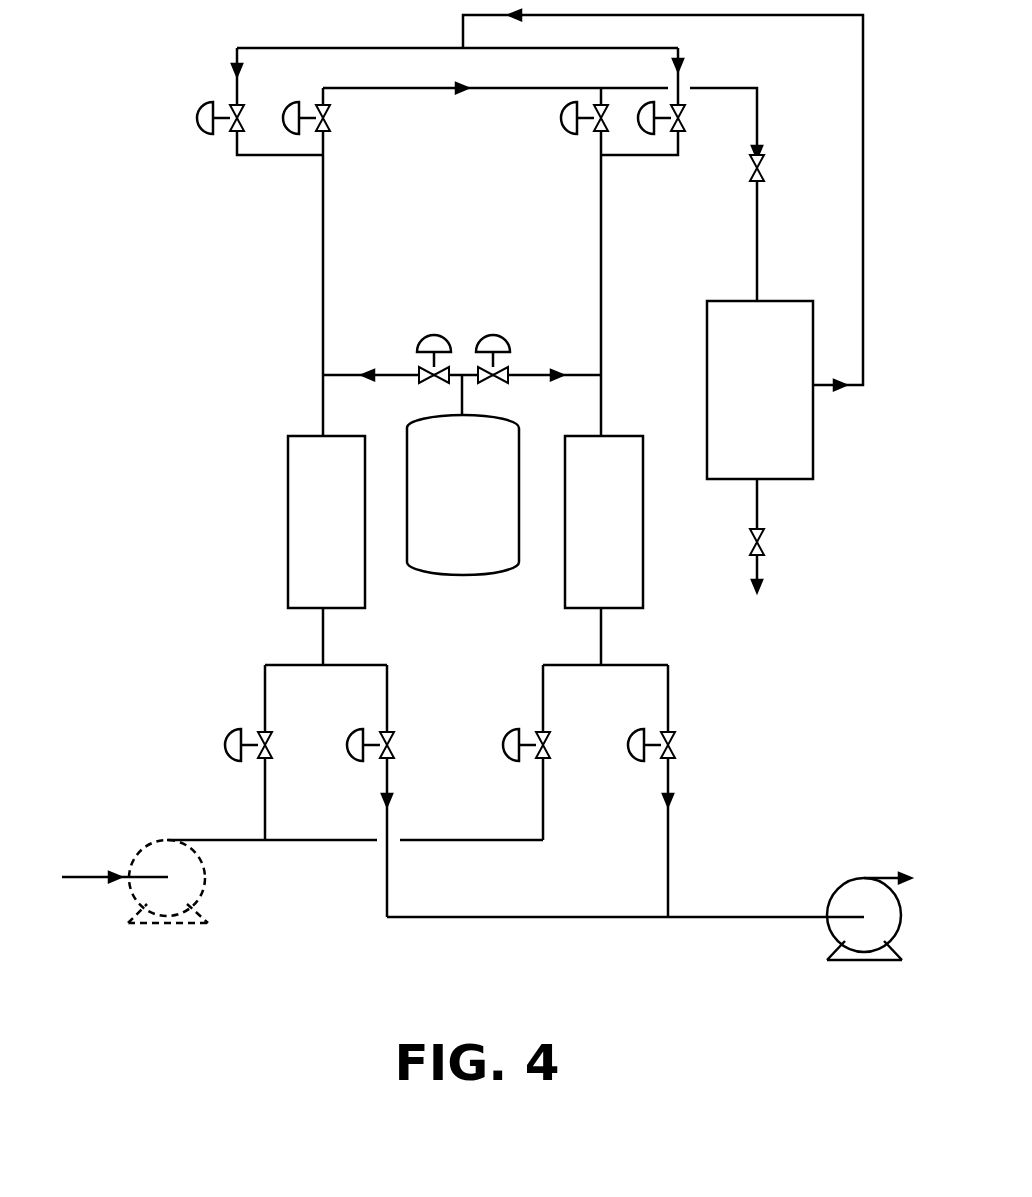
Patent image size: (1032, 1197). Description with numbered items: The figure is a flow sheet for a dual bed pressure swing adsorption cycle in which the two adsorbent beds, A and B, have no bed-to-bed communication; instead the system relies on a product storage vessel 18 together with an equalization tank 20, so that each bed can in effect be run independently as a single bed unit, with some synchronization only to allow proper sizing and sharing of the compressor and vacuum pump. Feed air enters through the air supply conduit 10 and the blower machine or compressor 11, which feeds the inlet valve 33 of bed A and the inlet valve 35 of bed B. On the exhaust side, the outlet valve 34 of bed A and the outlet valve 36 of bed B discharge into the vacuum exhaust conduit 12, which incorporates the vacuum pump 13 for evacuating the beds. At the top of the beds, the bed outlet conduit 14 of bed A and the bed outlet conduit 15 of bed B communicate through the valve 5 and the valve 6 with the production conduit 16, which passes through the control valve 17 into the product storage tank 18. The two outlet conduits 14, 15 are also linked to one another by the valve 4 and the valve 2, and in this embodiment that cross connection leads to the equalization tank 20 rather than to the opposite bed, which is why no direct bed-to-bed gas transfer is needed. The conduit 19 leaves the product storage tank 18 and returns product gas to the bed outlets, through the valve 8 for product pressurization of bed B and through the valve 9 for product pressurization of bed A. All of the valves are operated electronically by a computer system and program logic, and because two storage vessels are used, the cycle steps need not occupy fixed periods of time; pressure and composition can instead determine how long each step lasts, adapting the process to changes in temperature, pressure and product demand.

The valve 2 is at (502, 370).
The valve 4 is at (424, 370).
The valve 5 is at (314, 118).
The valve 6 is at (592, 118).
The valve 8 is at (669, 118).
The valve 9 is at (228, 118).
The air supply conduit 10 is at (105, 888).
The blower machine or compressor 11 is at (168, 881).
The vacuum exhaust conduit 12 is at (625, 900).
The vacuum pump 13 is at (869, 916).
The bed outlet conduit 14 is at (326, 369).
The bed outlet conduit 15 is at (604, 369).
The production conduit 16 is at (540, 118).
The control valve 17 is at (742, 228).
The product storage tank 18 is at (760, 446).
The conduit 19 is at (663, 200).
The equalization tank 20 is at (463, 495).
The inlet valve 33 is at (262, 745).
The outlet valve 34 is at (385, 745).
The inlet valve 35 is at (541, 745).
The outlet valve 36 is at (666, 745).